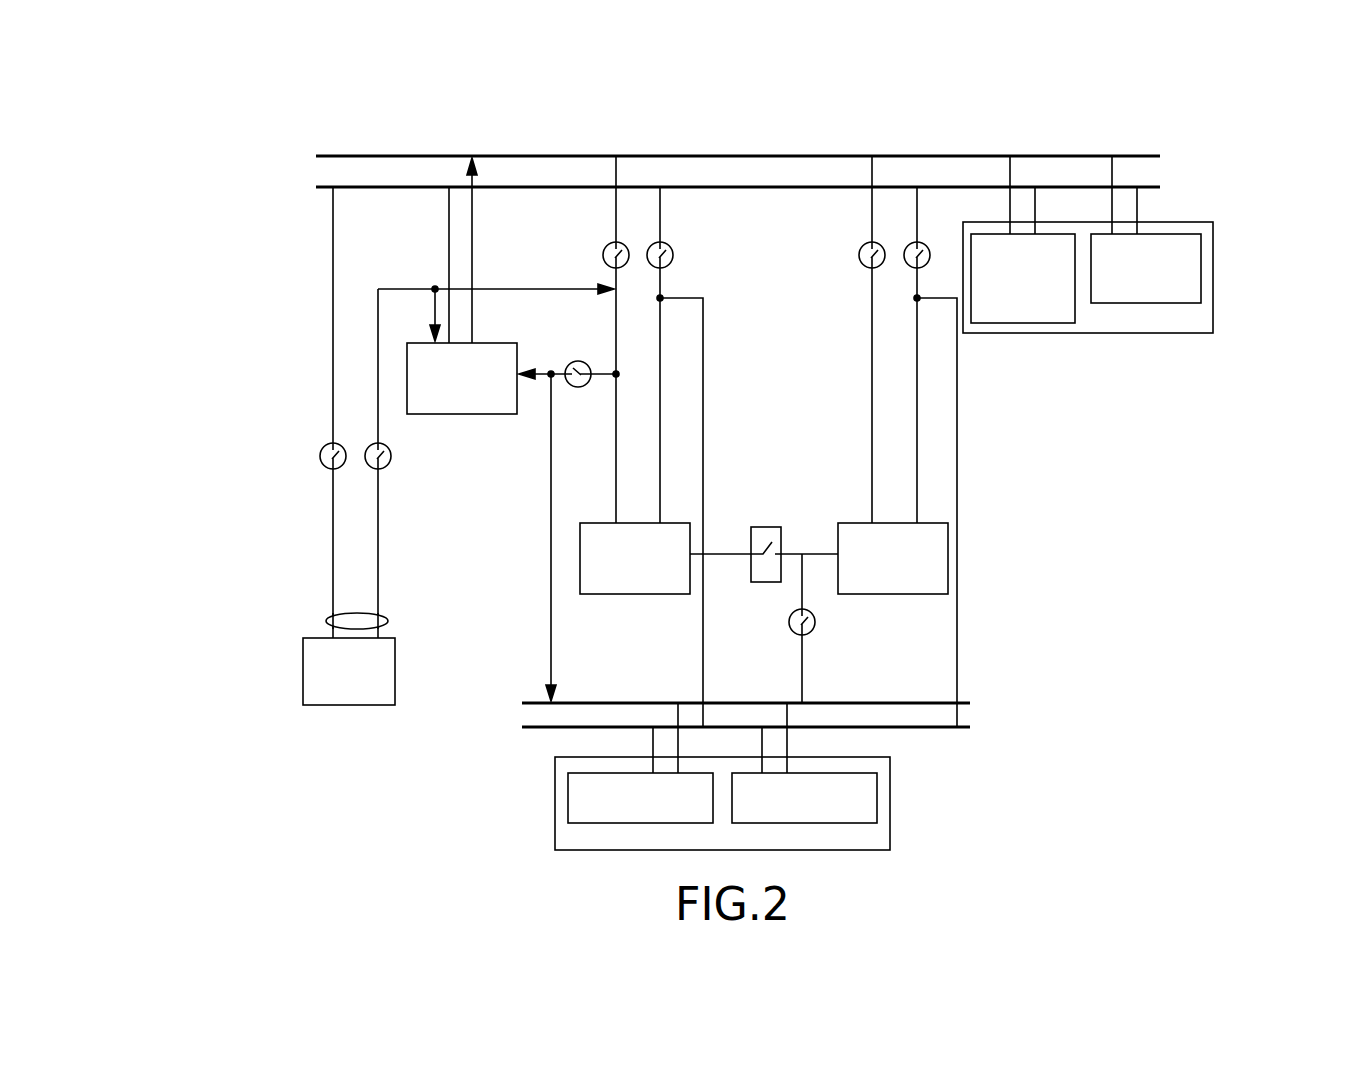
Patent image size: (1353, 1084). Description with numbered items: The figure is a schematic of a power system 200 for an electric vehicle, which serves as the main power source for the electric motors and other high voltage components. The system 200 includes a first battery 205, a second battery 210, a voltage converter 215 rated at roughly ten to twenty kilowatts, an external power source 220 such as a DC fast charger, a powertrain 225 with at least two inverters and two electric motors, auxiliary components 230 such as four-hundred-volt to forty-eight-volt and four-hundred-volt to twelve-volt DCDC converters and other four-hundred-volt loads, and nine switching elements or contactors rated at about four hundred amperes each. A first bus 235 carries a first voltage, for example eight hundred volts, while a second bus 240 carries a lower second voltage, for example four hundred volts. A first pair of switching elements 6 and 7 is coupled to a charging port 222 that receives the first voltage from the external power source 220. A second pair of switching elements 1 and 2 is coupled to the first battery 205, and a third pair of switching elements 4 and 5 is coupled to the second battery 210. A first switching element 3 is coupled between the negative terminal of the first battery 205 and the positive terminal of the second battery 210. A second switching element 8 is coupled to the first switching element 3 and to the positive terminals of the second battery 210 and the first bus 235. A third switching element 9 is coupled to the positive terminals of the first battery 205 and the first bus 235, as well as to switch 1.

The switching element 1 is at (604, 256).
The switching element 2 is at (675, 256).
The first switching element 3 is at (766, 537).
The switching element 4 is at (860, 256).
The switching element 5 is at (929, 256).
The switching element 6 is at (397, 456).
The switching element 7 is at (319, 456).
The second switching element 8 is at (814, 622).
The third switching element 9 is at (578, 359).
The power system 200 is at (1145, 520).
The first battery 205 is at (650, 594).
The second battery 210 is at (910, 594).
The voltage converter 215 is at (490, 414).
The external power source 220 is at (397, 670).
The charging port 222 is at (386, 620).
The powertrain 225 is at (890, 790).
The auxiliary components 230 is at (1213, 262).
The first bus 235 is at (1097, 737).
The second bus 240 is at (200, 152).